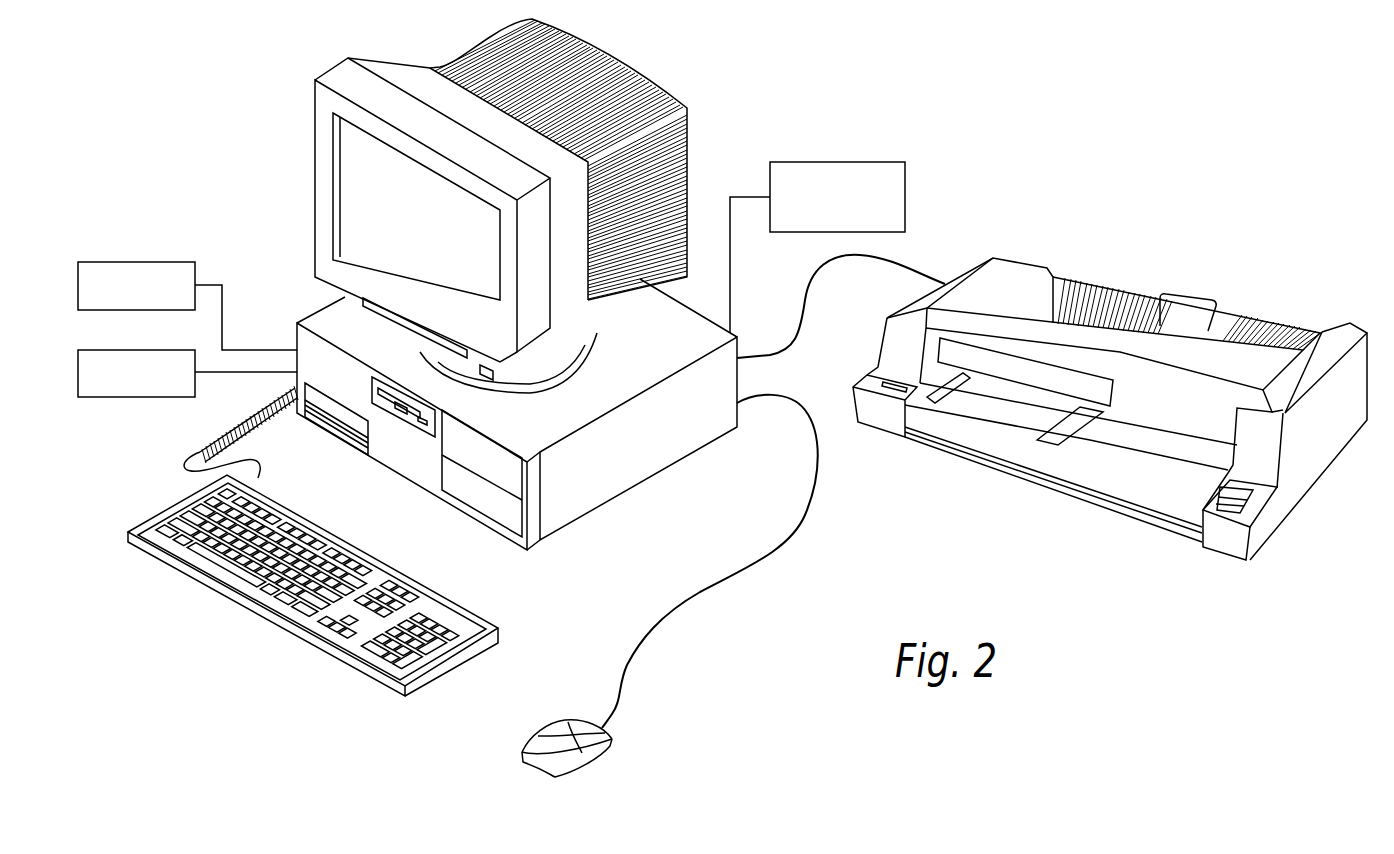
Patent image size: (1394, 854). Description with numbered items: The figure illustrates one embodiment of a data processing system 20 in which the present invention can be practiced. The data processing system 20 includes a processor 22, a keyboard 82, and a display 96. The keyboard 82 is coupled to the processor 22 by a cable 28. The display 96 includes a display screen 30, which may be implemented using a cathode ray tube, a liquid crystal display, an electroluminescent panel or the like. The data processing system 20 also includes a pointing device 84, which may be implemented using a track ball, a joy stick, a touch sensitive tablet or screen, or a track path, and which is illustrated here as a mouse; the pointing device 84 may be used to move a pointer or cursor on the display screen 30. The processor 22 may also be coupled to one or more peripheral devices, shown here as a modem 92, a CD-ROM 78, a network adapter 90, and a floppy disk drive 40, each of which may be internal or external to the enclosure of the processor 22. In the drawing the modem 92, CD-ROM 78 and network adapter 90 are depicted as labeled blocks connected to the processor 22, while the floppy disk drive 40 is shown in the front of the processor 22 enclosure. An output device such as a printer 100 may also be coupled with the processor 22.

The data processing system 20 is at (898, 62).
The processor 22 is at (517, 431).
The cable 28 is at (218, 430).
The display screen 30 is at (437, 244).
The floppy disk drive 40 is at (403, 410).
The CD-ROM 78 is at (127, 350).
The keyboard 82 is at (283, 636).
The pointing device 84 is at (600, 750).
The network adapter 90 is at (905, 178).
The modem 92 is at (127, 262).
The display 96 is at (297, 161).
The printer 100 is at (1060, 246).